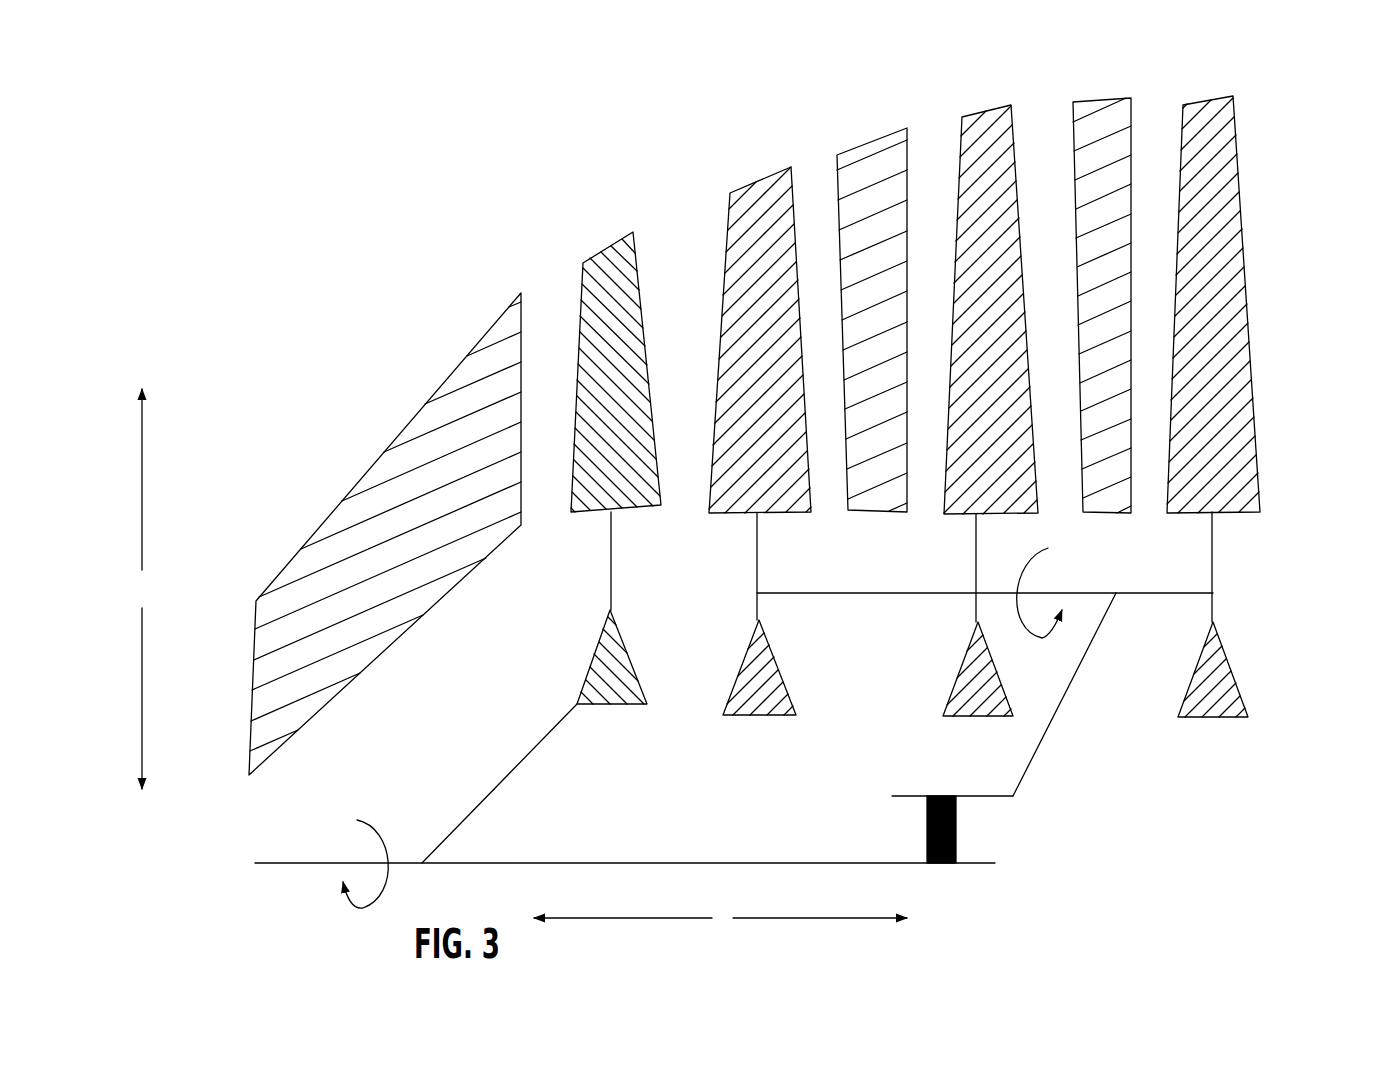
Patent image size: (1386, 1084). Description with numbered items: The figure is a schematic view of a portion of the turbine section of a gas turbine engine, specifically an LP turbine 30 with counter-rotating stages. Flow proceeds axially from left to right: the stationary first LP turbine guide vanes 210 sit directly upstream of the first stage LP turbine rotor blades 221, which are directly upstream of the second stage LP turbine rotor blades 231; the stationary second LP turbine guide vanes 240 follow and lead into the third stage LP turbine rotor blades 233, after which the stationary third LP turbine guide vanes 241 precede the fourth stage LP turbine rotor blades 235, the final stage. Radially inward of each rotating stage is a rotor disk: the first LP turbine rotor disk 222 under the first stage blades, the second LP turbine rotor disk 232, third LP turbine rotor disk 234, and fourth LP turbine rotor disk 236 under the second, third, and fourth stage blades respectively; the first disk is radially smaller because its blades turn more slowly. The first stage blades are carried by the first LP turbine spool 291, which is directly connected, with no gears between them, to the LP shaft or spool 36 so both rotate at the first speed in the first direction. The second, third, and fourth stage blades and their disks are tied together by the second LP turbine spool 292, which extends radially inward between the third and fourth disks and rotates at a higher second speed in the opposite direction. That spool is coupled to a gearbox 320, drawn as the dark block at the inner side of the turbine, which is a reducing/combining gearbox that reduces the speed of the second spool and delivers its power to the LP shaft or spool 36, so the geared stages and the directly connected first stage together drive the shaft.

The LP turbine 30 is at (381, 236).
The LP shaft or spool 36 is at (313, 862).
The first LP turbine guide vanes 210 is at (388, 468).
The first stage LP turbine rotor blades 221 is at (606, 258).
The first LP turbine rotor disk 222 is at (595, 662).
The second stage LP turbine rotor blades 231 is at (748, 190).
The second LP turbine rotor disk 232 is at (772, 683).
The third stage LP turbine rotor blades 233 is at (990, 118).
The third LP turbine rotor disk 234 is at (988, 705).
The fourth stage LP turbine rotor blades 235 is at (1200, 108).
The fourth LP turbine rotor disk 236 is at (1228, 685).
The second LP turbine guide vanes 240 is at (876, 150).
The third LP turbine guide vanes 241 is at (1103, 112).
The first LP turbine spool 291 is at (518, 770).
The second LP turbine spool 292 is at (1045, 738).
The gearbox 320 is at (1035, 848).